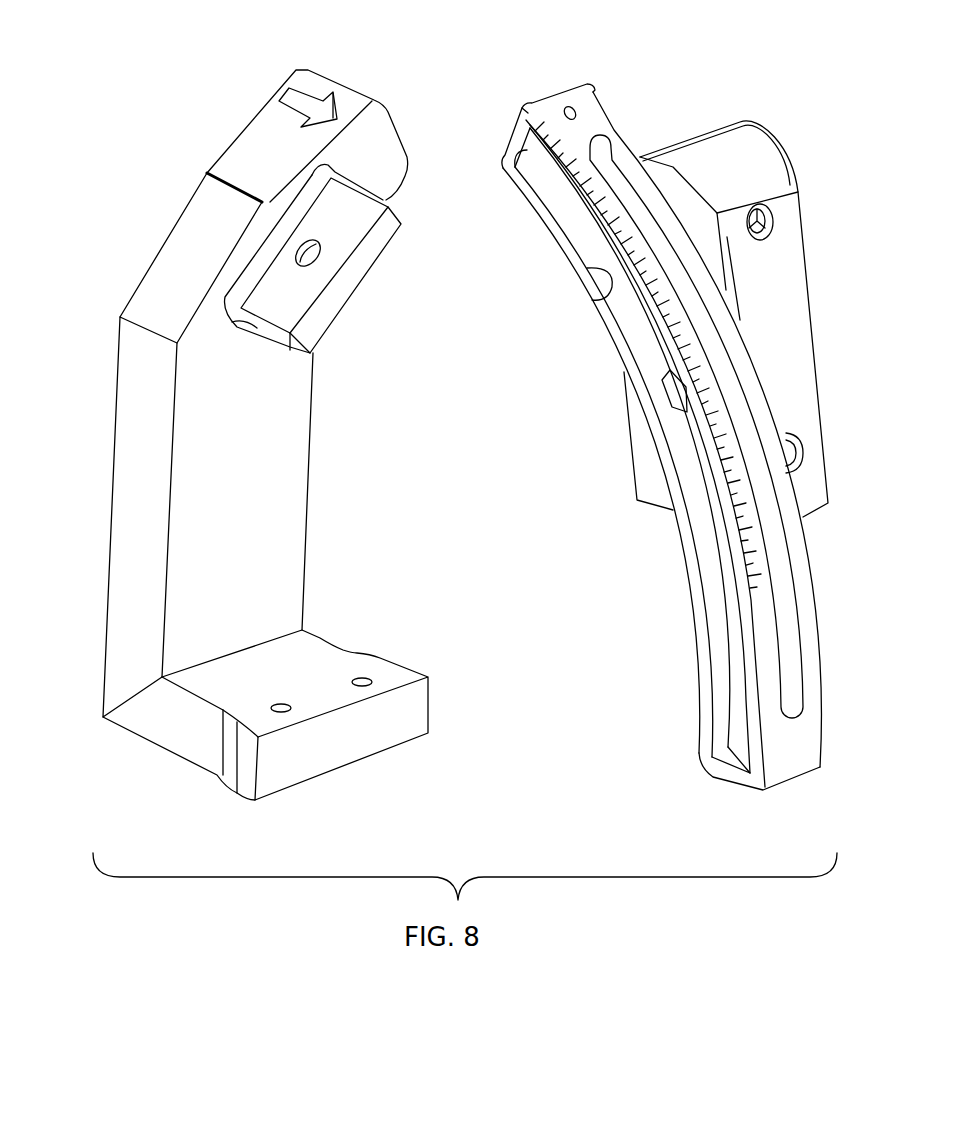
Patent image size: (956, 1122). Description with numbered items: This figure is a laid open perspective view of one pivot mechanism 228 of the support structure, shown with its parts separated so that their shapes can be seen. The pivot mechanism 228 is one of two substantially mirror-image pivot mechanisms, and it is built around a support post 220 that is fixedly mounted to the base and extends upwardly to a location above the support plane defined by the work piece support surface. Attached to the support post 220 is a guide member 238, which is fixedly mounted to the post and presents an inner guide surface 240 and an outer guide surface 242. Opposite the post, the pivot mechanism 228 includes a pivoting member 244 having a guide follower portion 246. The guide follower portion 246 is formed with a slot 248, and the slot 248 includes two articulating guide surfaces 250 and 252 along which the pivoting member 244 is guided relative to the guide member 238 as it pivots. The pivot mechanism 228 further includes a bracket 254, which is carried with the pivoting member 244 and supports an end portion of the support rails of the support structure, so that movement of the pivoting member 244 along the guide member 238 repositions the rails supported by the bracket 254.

The support post 220 is at (138, 295).
The pivot mechanism 228 is at (115, 128).
The guide member 238 is at (388, 208).
The inner guide surface 240 is at (362, 282).
The outer guide surface 242 is at (267, 270).
The pivoting member 244 is at (776, 77).
The guide follower portion 246 is at (619, 117).
The slot 248 is at (503, 158).
The articulating guide surface 250 is at (605, 288).
The articulating guide surface 252 is at (737, 717).
The bracket 254 is at (693, 133).